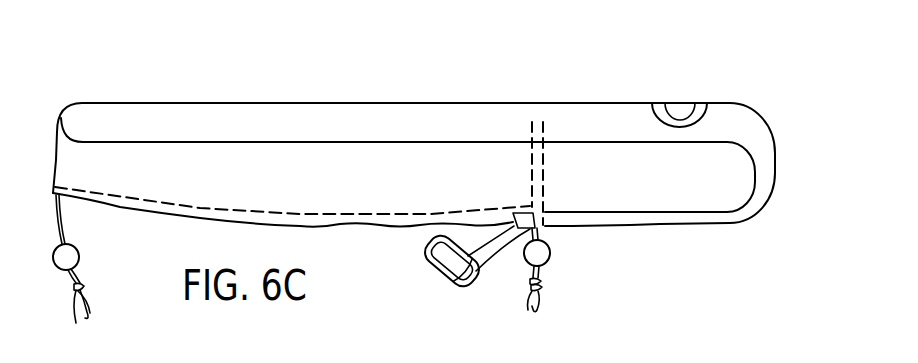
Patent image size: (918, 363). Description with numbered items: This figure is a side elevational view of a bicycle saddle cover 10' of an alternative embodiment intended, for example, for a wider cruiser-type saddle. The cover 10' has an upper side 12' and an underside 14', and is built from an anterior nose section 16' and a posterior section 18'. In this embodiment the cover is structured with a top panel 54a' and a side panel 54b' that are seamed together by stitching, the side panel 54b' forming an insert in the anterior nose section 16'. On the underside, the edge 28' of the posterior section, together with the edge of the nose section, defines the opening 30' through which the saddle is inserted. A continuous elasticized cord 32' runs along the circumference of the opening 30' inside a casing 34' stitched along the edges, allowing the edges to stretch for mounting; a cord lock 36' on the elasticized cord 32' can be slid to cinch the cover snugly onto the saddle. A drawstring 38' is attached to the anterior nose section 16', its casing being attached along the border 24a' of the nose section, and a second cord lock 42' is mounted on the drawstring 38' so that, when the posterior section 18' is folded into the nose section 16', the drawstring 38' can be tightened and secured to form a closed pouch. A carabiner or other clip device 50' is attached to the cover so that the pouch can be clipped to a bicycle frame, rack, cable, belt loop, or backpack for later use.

The cover 10' is at (414, 196).
The upper side 12' is at (422, 196).
The underside 14' is at (151, 213).
The anterior nose section 16' is at (760, 166).
The posterior section 18' is at (393, 98).
The border of the anterior nose section 24a' is at (529, 142).
The edge of the posterior section 28' is at (315, 253).
The opening 30' is at (546, 274).
The elasticized cord 32' is at (64, 261).
The casing 34' is at (292, 223).
The cord lock 36' is at (76, 240).
The drawstring 38' is at (548, 286).
The cord lock 42' is at (561, 264).
The clip device 50' is at (471, 264).
The top panel 54a' is at (394, 166).
The side panel 54b' is at (715, 204).